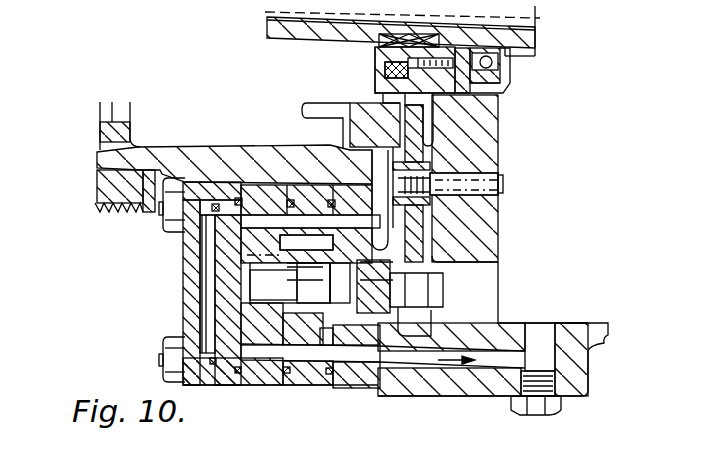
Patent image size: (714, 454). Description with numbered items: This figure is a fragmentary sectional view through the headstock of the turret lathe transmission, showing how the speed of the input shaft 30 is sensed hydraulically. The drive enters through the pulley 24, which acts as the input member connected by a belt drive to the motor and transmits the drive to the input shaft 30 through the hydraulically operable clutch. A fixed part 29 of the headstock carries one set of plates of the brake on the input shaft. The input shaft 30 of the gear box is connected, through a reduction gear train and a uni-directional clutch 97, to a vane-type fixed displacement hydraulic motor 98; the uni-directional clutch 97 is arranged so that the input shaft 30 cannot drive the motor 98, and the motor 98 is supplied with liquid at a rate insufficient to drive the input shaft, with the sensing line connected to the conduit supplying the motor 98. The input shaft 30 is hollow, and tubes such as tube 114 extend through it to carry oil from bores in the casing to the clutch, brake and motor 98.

The tube 114 is at (276, 3).
The input shaft 30 is at (303, 40).
The fixed part of the headstock 29 is at (372, 105).
The uni-directional clutch 97 is at (470, 80).
The pulley 24 is at (130, 195).
The vane-type fixed displacement hydraulic motor 98 is at (266, 330).